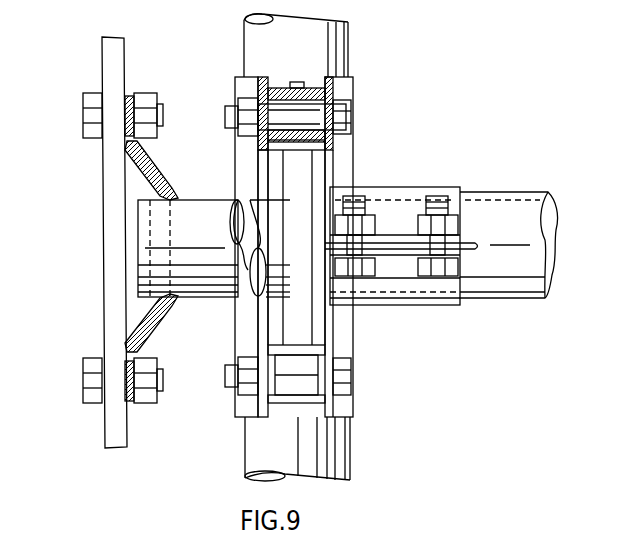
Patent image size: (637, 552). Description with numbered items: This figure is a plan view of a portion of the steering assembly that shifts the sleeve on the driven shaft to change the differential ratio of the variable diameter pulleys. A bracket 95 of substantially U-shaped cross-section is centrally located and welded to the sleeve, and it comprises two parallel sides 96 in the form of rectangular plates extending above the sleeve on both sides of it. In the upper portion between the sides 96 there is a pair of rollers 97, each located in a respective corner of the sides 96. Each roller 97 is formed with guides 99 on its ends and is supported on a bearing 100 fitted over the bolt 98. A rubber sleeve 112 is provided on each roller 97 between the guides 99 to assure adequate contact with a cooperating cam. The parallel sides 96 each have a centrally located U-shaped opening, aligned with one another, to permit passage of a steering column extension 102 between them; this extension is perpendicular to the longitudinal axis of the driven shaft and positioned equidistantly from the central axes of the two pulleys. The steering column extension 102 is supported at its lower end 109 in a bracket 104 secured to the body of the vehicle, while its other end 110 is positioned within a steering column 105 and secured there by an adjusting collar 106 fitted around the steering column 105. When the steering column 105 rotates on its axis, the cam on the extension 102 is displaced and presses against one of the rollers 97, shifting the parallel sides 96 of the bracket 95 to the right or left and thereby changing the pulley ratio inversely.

The bracket 95 is at (301, 265).
The parallel sides 96 is at (264, 316).
The rollers 97 is at (290, 395).
The bolt 98 is at (340, 110).
The guides 99 is at (236, 122).
The bearing 100 is at (297, 247).
The steering column extension 102 is at (176, 212).
The bracket 104 is at (125, 165).
The steering column 105 is at (497, 288).
The adjusting collar 106 is at (440, 282).
The lower end 109 is at (125, 253).
The other end 110 is at (462, 210).
The rubber sleeve 112 is at (292, 90).